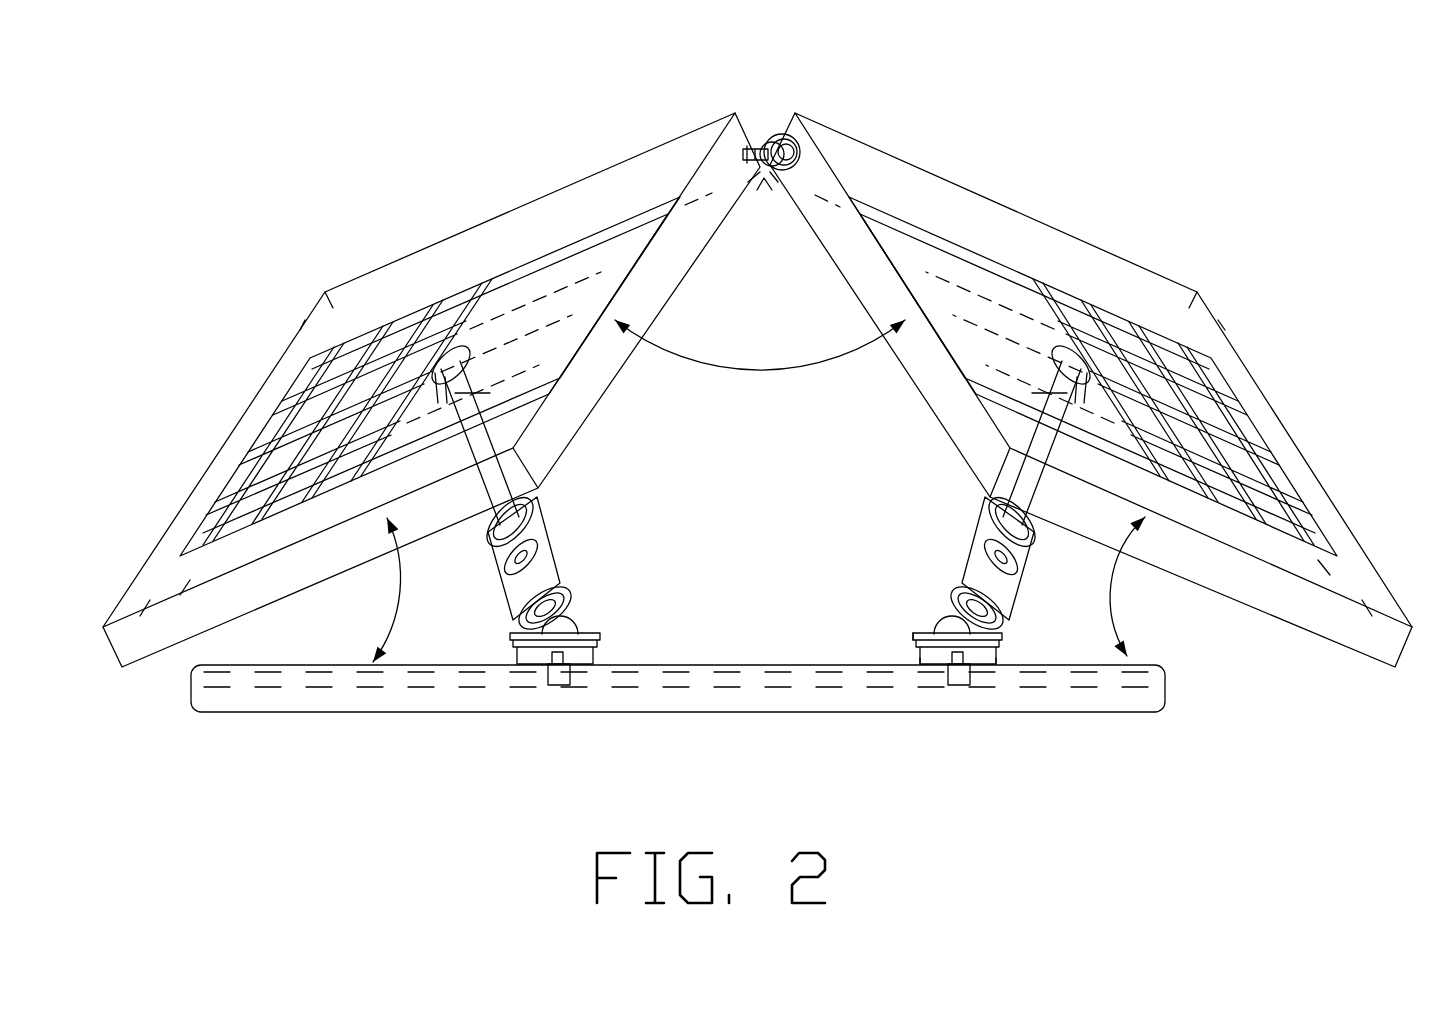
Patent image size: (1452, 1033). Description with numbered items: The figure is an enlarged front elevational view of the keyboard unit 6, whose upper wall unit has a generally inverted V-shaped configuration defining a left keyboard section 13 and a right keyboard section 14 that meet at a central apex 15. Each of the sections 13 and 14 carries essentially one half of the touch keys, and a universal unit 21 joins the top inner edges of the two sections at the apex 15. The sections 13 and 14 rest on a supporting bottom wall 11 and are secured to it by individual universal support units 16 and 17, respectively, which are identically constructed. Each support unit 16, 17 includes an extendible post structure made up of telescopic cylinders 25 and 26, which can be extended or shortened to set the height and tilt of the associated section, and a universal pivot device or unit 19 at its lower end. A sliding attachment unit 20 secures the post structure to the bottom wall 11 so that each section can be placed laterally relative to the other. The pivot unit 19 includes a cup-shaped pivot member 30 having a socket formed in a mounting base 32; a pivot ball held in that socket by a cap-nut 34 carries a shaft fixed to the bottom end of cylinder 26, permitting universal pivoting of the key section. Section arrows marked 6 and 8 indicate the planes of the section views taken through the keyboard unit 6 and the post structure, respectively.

The keyboard unit 6 is at (435, 768).
The section line 8- 8 is at (743, 155).
The supporting bottom wall 11 is at (788, 660).
The left keyboard section 13 is at (622, 161).
The right keyboard section 14 is at (1020, 210).
The central apex 15 is at (769, 124).
The universal support unit 16 is at (560, 536).
The universal support unit 17 is at (951, 541).
The universal pivot unit 19 is at (602, 634).
The sliding attachment unit 20 is at (933, 695).
The universal unit 21 is at (769, 183).
The telescopic cylinder 25 is at (534, 499).
The telescopic cylinder 26 is at (552, 583).
The cup-shaped pivot member 30 is at (915, 658).
The mounting base 32 is at (1004, 659).
The cap-nut 34 is at (912, 628).